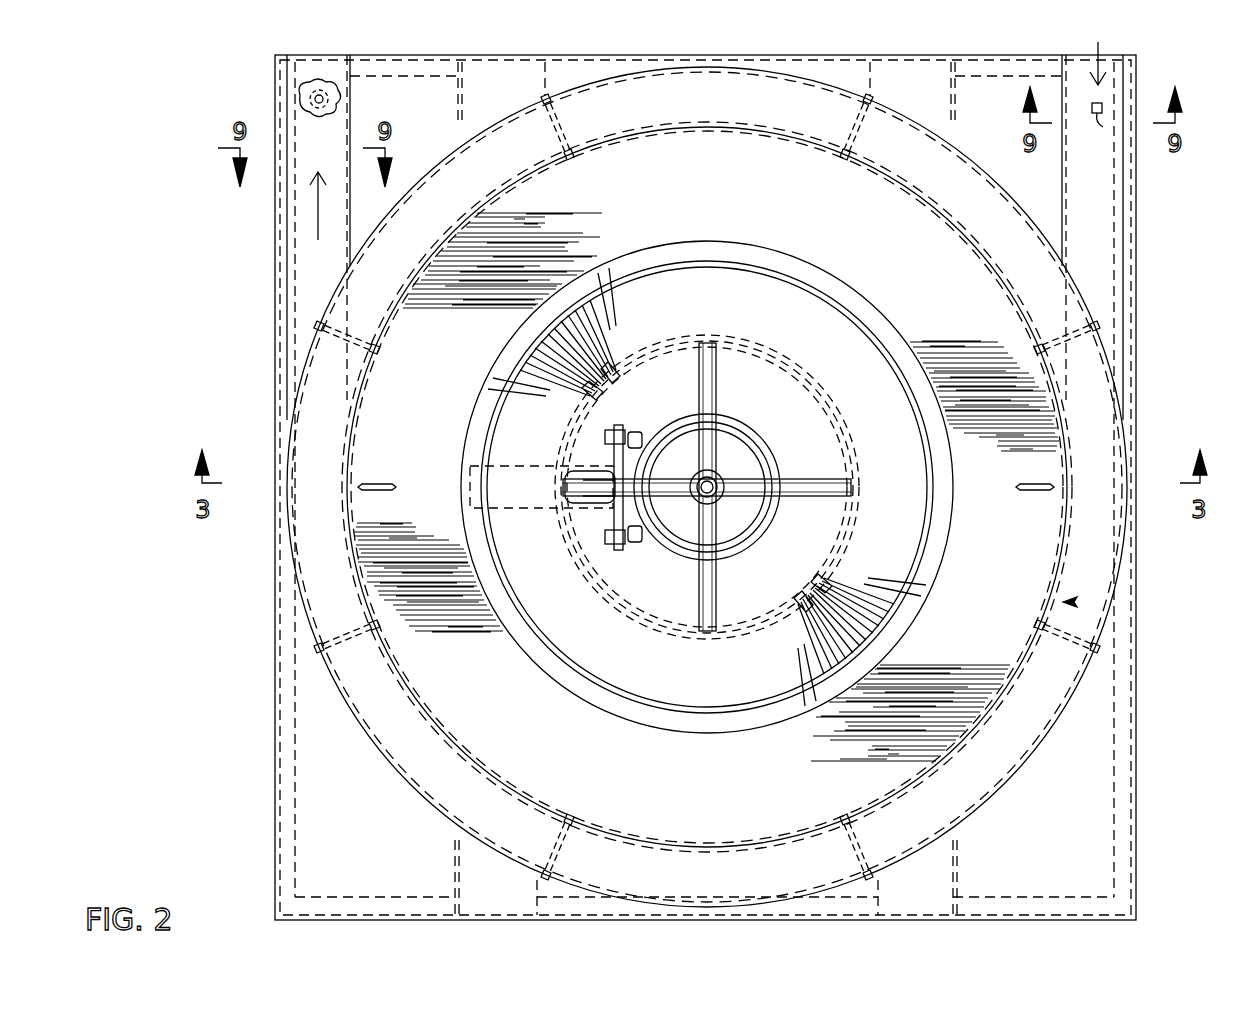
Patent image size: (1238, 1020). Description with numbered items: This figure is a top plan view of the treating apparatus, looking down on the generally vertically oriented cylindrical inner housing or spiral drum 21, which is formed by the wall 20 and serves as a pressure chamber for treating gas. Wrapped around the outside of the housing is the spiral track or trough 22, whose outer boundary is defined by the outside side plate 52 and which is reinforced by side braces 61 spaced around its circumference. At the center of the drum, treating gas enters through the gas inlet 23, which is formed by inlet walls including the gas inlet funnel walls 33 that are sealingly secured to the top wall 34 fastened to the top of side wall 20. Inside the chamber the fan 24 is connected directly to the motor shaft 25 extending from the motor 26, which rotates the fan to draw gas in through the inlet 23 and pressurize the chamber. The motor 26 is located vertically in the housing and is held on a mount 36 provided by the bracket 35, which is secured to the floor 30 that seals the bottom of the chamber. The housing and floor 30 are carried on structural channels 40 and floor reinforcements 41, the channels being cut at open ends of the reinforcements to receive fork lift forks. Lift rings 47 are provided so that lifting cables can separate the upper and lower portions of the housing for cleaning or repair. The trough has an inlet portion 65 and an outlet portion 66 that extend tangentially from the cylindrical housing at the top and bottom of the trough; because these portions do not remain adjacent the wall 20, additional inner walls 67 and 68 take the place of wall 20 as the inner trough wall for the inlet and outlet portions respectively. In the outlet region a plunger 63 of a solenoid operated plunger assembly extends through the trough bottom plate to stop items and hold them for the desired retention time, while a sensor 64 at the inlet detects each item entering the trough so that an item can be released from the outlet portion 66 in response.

The wall 20 is at (1062, 545).
The cylindrical inner housing 21 is at (1072, 602).
The spiral track or trough 22 is at (760, 110).
The gas inlet 23 is at (755, 577).
The fan 24 is at (803, 372).
The motor shaft 25 is at (716, 483).
The motor 26 is at (741, 428).
The floor 30 is at (315, 833).
The gas inlet funnel walls 33 is at (745, 290).
The top wall 34 is at (732, 204).
The bracket 35 is at (595, 530).
The mount 36 is at (638, 406).
The structural channels 40 is at (1136, 830).
The floor reinforcements 41 is at (455, 862).
The lift rings 47 is at (382, 483).
The outside side plate 52 is at (1043, 745).
The side braces 61 is at (543, 95).
The plunger 63 is at (308, 97).
The sensor 64 is at (1100, 106).
The inlet portion 65 is at (1108, 188).
The outlet portion 66 is at (305, 240).
The inner wall for inlet portion 67 is at (1062, 166).
The inner wall for outlet portion 68 is at (353, 205).